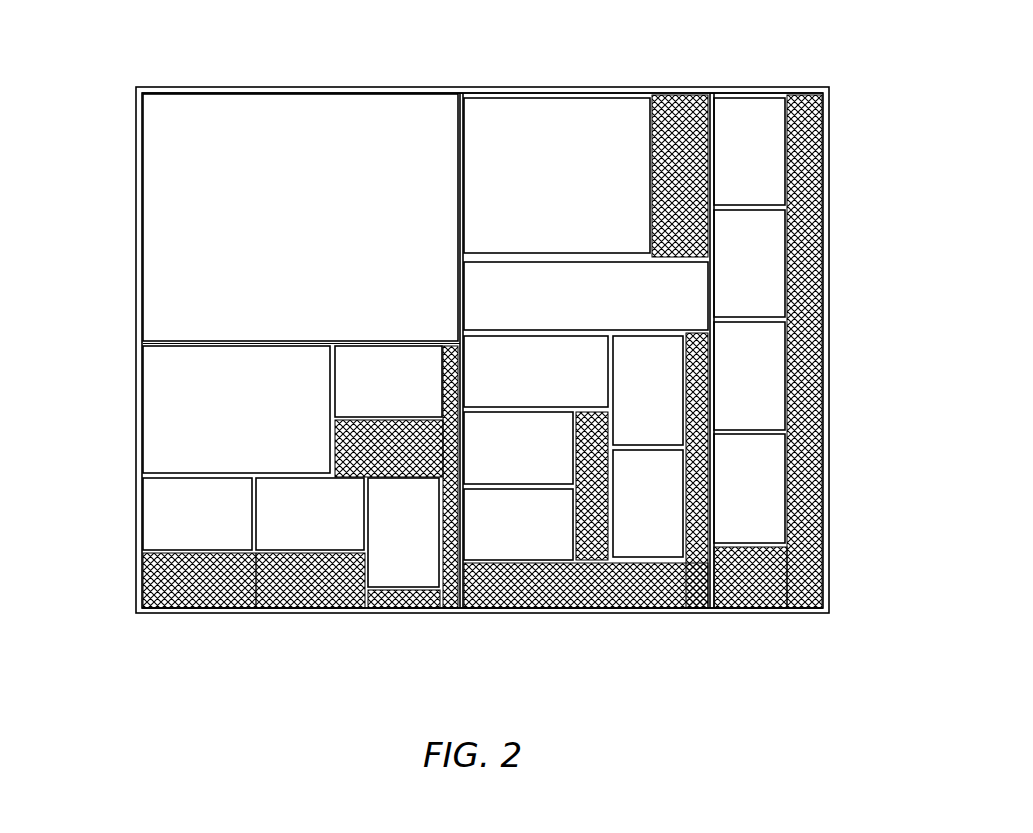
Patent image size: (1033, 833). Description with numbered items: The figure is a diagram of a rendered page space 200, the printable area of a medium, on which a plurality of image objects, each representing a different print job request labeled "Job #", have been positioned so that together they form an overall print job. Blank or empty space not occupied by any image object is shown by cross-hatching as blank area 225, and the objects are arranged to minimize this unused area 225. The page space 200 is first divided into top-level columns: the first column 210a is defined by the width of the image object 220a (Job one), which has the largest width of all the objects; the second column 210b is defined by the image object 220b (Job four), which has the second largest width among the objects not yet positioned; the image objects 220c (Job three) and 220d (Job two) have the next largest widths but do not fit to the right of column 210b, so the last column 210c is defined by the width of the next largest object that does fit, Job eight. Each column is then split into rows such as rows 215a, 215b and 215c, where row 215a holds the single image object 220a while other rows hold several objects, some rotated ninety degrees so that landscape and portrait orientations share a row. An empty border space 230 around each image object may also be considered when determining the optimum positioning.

The page space 200 is at (778, 65).
The first column 210a is at (463, 616).
The second column 210b is at (710, 616).
The last column 210c is at (828, 616).
The row 215a is at (130, 88).
The next row 215b is at (130, 345).
The row 215c is at (130, 479).
The image object 220a is at (288, 108).
The image object 220b is at (632, 277).
The image object 220c is at (528, 107).
The image object 220d is at (233, 363).
The blank area 225 is at (816, 158).
The empty border space 230 is at (462, 97).